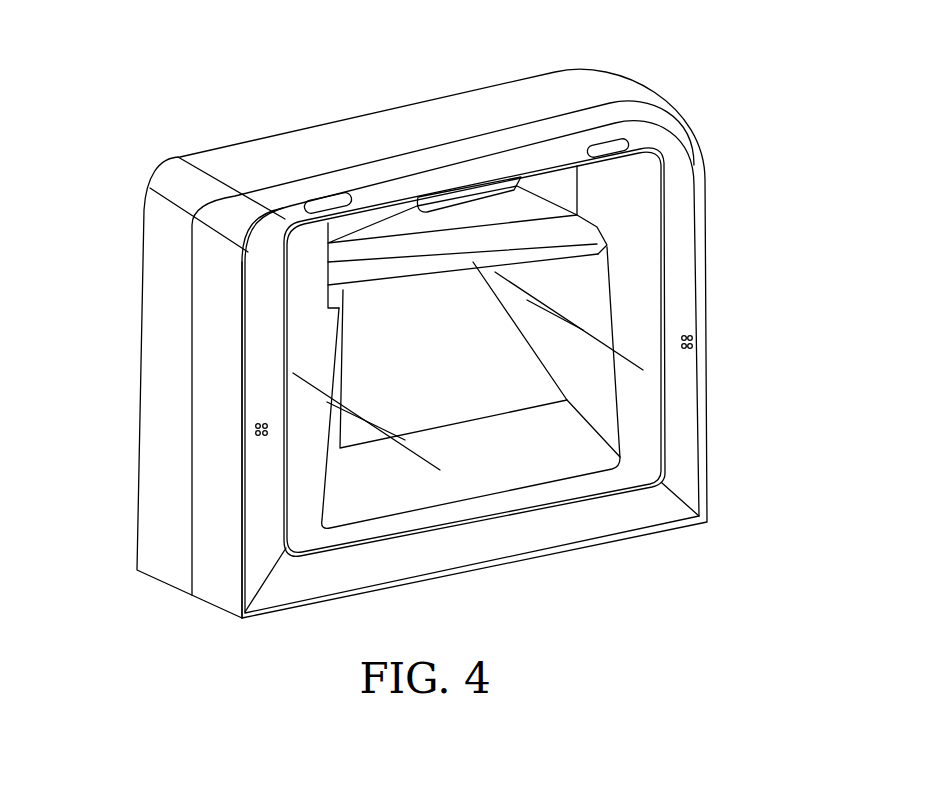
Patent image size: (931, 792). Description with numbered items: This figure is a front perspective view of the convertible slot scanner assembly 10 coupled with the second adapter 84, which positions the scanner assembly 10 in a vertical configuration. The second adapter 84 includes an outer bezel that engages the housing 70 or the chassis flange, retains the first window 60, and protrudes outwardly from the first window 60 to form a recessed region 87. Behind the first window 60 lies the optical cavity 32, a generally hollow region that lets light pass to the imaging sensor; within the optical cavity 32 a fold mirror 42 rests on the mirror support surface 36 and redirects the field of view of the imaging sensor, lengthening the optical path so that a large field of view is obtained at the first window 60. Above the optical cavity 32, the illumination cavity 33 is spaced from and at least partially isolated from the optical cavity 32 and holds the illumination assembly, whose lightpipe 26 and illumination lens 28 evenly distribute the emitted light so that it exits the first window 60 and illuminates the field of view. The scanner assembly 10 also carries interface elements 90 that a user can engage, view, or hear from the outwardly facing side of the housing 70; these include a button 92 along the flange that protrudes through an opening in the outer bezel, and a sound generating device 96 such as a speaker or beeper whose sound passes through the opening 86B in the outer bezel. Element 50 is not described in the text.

The convertible slot scanner assembly 10 is at (148, 604).
The lightpipe 26 is at (462, 198).
The illumination lens 28 is at (653, 183).
The optical cavity 32 is at (502, 345).
The illumination cavity 33 is at (592, 205).
The mirror support surface 36 is at (502, 472).
The fold mirror 42 is at (453, 393).
The window opening edge 50 is at (590, 482).
The first window 60 is at (637, 438).
The housing 70 is at (140, 265).
The second adapter 84 is at (686, 386).
The opening 86B is at (253, 428).
The recessed region 87 is at (280, 590).
The interface element 90 is at (608, 142).
The button 92 is at (319, 207).
The sound generating device 96 is at (240, 410).